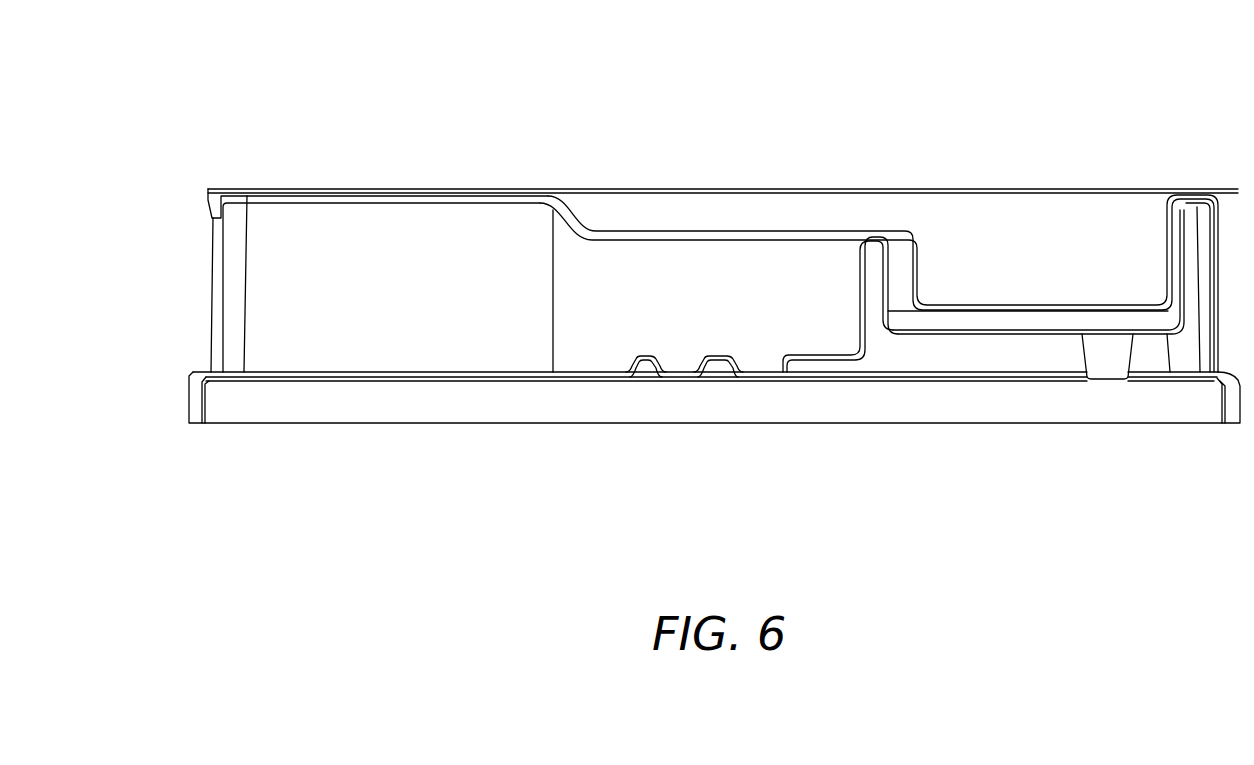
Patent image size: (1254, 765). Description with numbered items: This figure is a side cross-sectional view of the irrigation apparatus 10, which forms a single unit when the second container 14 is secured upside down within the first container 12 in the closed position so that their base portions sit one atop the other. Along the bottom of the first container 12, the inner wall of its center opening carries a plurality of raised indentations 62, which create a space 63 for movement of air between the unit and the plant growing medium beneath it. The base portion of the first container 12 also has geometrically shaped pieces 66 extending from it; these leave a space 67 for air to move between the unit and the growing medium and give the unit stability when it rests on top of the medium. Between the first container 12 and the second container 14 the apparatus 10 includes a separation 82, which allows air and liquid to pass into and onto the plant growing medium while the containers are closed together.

The irrigation apparatus 10 is at (224, 122).
The first container 12 is at (266, 256).
The second container 14 is at (1053, 213).
The raised indentations 62 is at (643, 370).
The space 63 is at (715, 370).
The geometrically shaped pieces 66 is at (1107, 352).
The space 67 is at (938, 353).
The separation 82 is at (1052, 320).